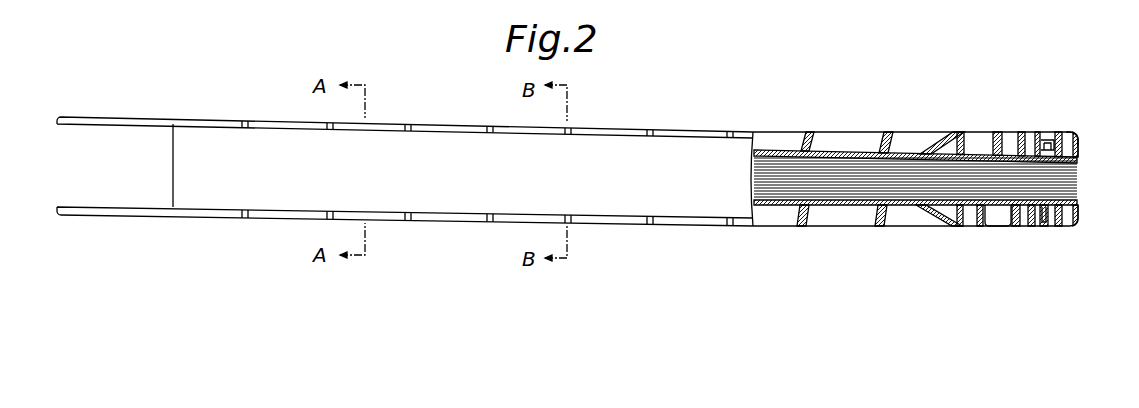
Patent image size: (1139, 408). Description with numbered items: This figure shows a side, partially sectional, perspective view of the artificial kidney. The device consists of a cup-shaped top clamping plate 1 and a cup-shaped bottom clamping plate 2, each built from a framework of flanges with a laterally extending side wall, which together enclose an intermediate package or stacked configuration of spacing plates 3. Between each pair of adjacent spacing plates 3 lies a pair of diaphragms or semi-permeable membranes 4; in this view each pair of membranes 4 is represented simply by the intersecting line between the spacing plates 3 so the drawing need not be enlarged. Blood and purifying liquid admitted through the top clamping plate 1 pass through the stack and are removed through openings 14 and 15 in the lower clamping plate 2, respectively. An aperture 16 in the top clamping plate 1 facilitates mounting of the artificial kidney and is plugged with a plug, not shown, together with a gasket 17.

The top clamping plate 1 is at (421, 139).
The bottom clamping plate 2 is at (470, 186).
The spacing plates 3 is at (845, 197).
The semi-permeable membranes 4 is at (872, 197).
The blood outlet opening 14 is at (1049, 228).
The purifying liquid outlet opening 15 is at (996, 212).
The mounting aperture 16 is at (1048, 144).
The gasket 17 is at (1077, 146).